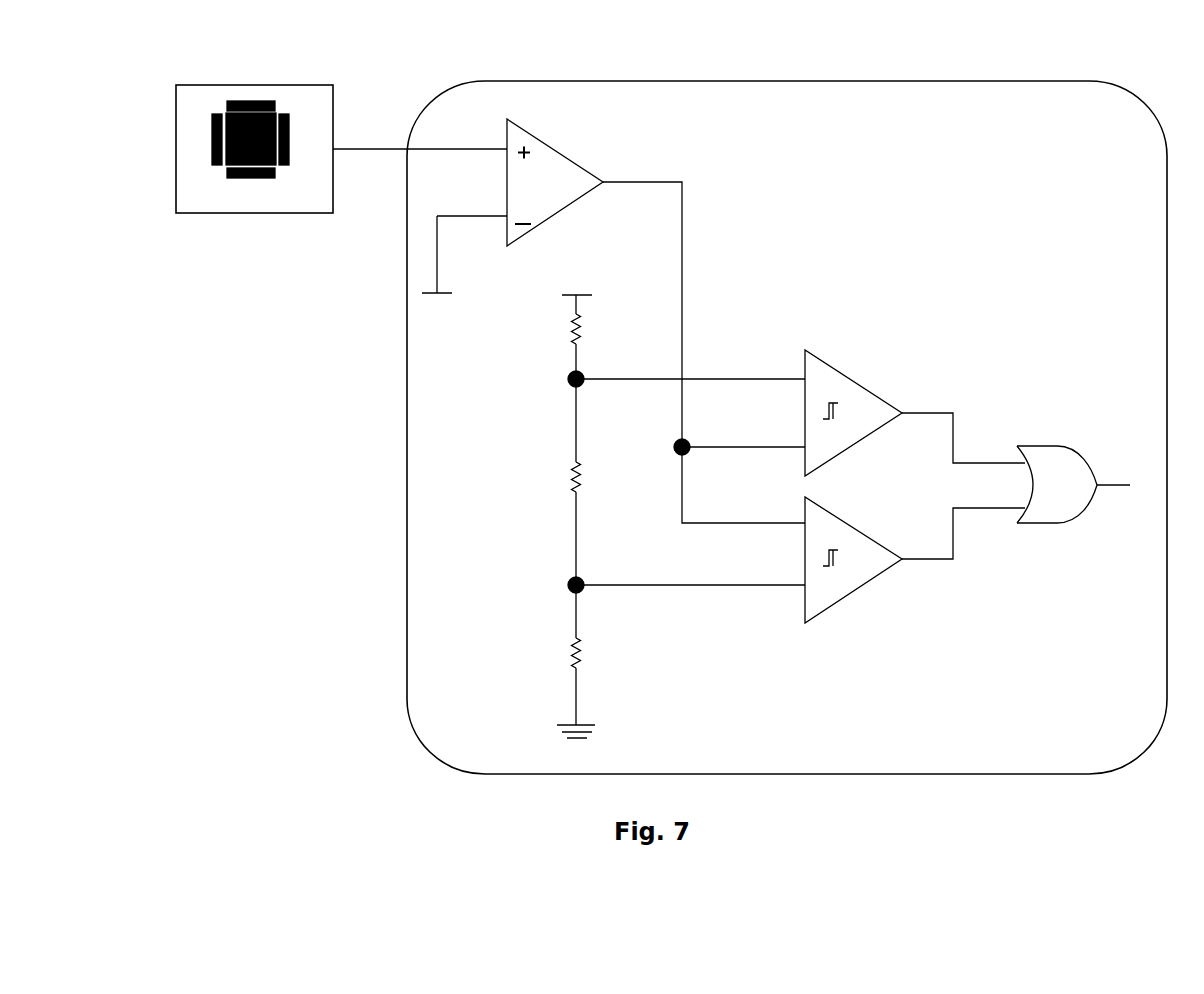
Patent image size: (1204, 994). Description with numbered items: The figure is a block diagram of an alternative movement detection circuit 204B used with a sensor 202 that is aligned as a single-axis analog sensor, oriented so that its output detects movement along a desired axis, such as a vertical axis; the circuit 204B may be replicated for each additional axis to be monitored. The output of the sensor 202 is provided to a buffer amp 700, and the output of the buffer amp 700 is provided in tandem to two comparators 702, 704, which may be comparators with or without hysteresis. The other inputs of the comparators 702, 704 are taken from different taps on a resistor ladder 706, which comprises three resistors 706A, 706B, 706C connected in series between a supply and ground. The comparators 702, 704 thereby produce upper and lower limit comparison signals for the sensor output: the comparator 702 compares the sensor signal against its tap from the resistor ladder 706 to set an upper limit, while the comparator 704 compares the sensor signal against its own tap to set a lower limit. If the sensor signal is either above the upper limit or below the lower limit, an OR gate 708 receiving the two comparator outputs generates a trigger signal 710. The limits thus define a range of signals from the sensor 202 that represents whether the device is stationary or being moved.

The sensor 202 is at (253, 213).
The alternative circuit 204B is at (685, 81).
The buffer amp 700 is at (512, 206).
The comparator 702 is at (915, 413).
The comparator 704 is at (915, 560).
The resistor ladder 706 is at (503, 463).
The resistor 706A is at (603, 329).
The resistor 706B is at (603, 477).
The resistor 706C is at (603, 653).
The OR gate 708 is at (1057, 474).
The trigger signal 710 is at (1130, 487).